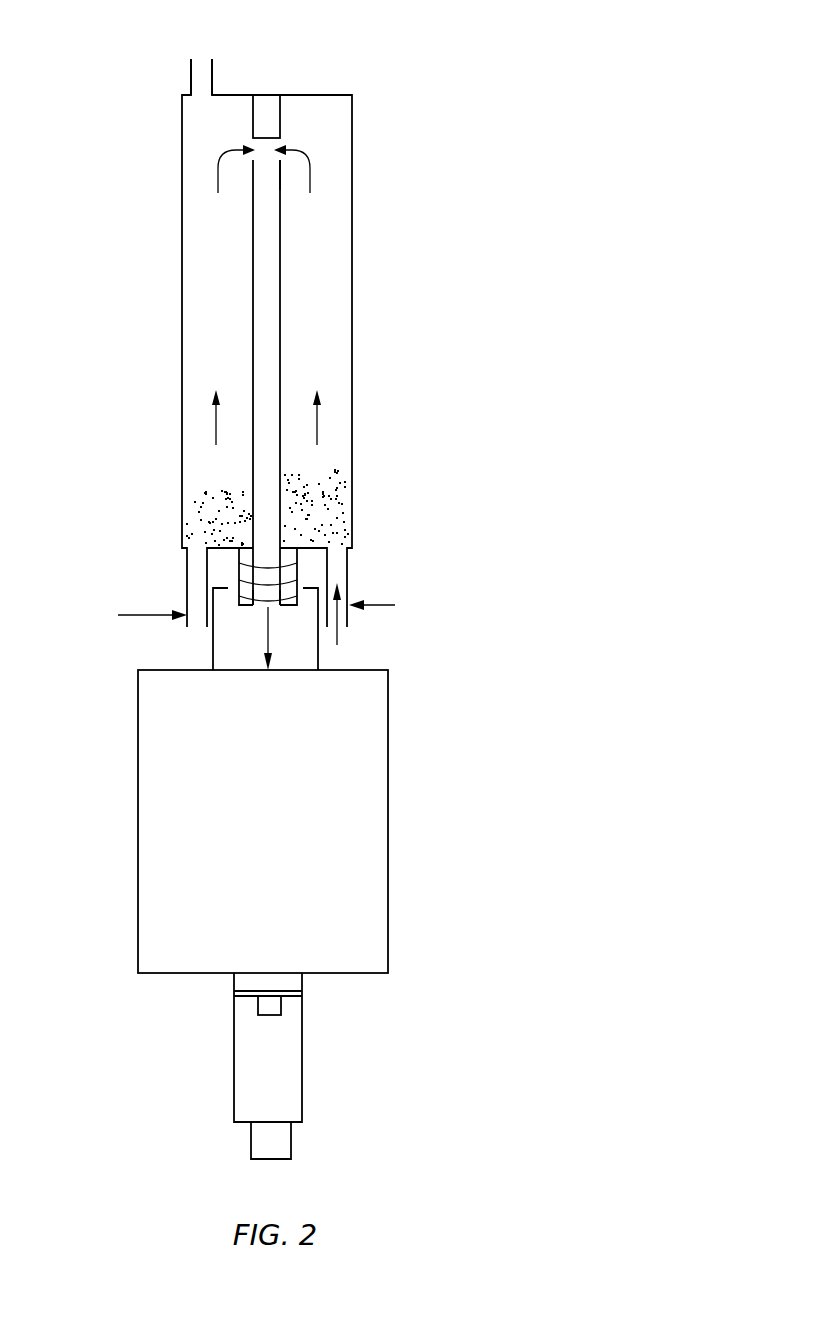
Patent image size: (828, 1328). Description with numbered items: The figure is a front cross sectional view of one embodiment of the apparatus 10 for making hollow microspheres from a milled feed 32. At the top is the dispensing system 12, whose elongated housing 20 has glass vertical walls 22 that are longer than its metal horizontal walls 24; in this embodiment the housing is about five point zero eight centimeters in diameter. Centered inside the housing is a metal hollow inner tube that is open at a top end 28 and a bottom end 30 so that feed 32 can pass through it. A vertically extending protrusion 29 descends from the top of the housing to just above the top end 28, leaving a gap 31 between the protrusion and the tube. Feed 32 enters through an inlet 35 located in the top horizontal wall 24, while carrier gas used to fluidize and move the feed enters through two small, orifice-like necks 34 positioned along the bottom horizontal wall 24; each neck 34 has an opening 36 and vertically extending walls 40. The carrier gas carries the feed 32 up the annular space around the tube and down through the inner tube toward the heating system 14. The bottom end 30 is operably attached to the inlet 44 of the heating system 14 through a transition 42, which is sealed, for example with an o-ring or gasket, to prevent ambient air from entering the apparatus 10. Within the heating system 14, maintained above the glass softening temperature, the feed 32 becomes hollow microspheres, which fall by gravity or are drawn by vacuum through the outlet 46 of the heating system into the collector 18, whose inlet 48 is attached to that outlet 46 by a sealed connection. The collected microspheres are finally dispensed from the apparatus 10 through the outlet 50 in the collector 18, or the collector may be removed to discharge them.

The apparatus 10 is at (297, 588).
The dispensing system 12 is at (271, 375).
The heating system 14 is at (363, 800).
The collector 18 is at (282, 1057).
The elongated housing 20 is at (302, 240).
The vertical walls 22 is at (353, 149).
The horizontal walls 24 is at (265, 95).
The top end 28 is at (267, 158).
The vertically extending protrusion 29 is at (259, 110).
The bottom end 30 is at (265, 537).
The gap 31 is at (273, 145).
The feed 32 is at (320, 487).
The neck 34 is at (256, 611).
The inlet 35 is at (200, 68).
The opening 36 is at (338, 635).
The vertically extending walls 40 is at (327, 567).
The transition 42 is at (239, 568).
The inlet 44 is at (277, 610).
The outlet 46 is at (272, 980).
The inlet 48 is at (277, 1005).
The outlet 50 is at (283, 1142).